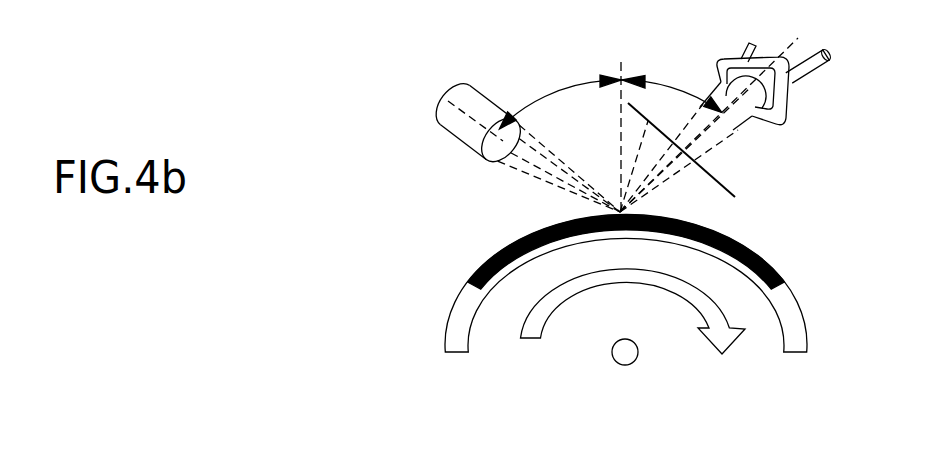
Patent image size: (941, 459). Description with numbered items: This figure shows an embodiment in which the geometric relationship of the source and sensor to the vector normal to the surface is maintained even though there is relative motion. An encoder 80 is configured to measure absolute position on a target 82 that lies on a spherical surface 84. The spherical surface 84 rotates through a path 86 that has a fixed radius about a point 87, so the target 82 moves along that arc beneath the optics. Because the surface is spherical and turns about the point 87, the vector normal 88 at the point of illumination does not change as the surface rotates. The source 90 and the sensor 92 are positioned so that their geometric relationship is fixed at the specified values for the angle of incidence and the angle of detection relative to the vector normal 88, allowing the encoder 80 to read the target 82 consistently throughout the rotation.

The encoder 80 is at (351, 138).
The target 82 is at (483, 268).
The spherical surface 84 is at (452, 313).
The path 86 is at (724, 312).
The point 87 is at (616, 362).
The vector normal 88 is at (620, 62).
The source 90 is at (438, 104).
The sensor 92 is at (798, 92).